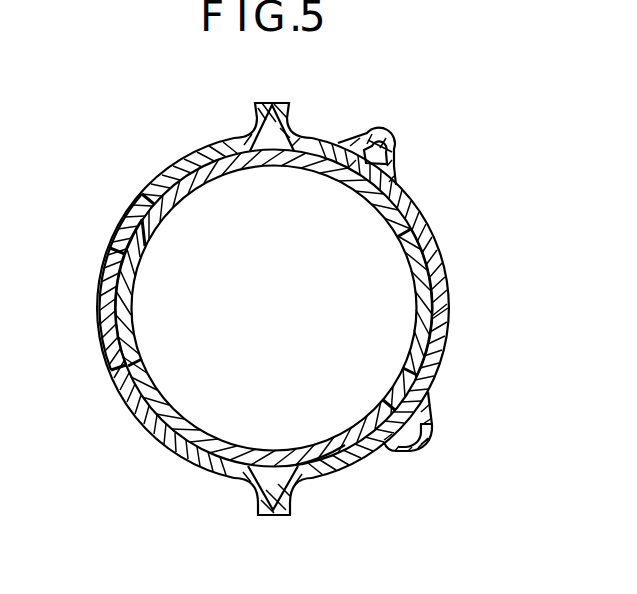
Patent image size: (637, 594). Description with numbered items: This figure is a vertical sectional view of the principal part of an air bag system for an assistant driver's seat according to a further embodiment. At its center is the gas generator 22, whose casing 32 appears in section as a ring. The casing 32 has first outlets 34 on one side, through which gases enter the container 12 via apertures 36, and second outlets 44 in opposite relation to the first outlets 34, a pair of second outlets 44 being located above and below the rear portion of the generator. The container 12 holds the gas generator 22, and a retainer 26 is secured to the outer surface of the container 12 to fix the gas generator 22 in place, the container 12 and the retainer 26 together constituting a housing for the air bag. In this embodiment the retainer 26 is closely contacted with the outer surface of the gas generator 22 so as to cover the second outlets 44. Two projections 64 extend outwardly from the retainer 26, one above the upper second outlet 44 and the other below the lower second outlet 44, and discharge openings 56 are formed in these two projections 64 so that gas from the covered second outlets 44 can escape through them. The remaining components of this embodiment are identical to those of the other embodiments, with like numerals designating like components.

The container 12 is at (253, 507).
The gas generator 22 is at (314, 442).
The retainer 26 is at (450, 305).
The casing 32 is at (168, 438).
The first outlets 34 is at (148, 238).
The apertures 36 is at (122, 219).
The second outlets 44 is at (410, 244).
The discharge openings 56 is at (408, 151).
The projections 64 is at (404, 128).